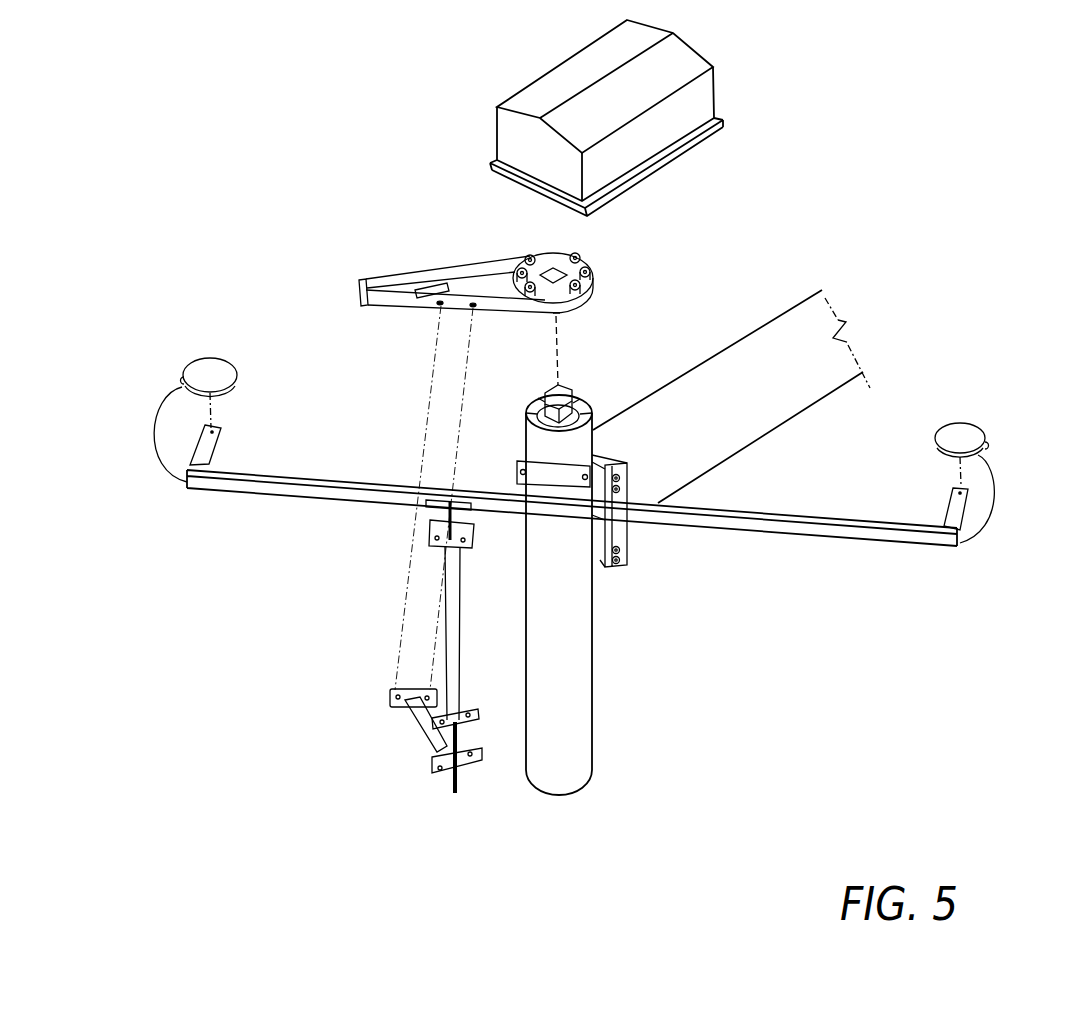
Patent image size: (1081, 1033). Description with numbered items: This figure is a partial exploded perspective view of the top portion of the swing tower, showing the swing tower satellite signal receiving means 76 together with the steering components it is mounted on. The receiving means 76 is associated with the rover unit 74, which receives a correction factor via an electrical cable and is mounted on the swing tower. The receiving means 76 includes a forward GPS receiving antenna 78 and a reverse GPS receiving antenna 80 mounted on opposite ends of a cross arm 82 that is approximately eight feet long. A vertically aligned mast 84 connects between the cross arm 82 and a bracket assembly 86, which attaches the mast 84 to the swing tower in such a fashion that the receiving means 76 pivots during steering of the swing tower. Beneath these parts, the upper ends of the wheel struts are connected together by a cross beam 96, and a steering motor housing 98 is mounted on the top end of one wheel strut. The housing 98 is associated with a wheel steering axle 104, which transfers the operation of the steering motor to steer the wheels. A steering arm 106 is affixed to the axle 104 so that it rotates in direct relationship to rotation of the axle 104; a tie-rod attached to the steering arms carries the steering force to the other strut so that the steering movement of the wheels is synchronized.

The rover unit 74 is at (647, 118).
The steering motor housing 98 is at (680, 60).
The steering arm 106 is at (397, 258).
The wheel steering axle 104 is at (578, 390).
The swing tower satellite signal receiving means 76 is at (566, 561).
The forward GPS receiving antenna 78 is at (208, 357).
The reverse GPS receiving antenna 80 is at (973, 422).
The cross arm 82 is at (812, 538).
The mast 84 is at (447, 645).
The bracket assembly 86 is at (410, 718).
The cross beam 96 is at (760, 427).